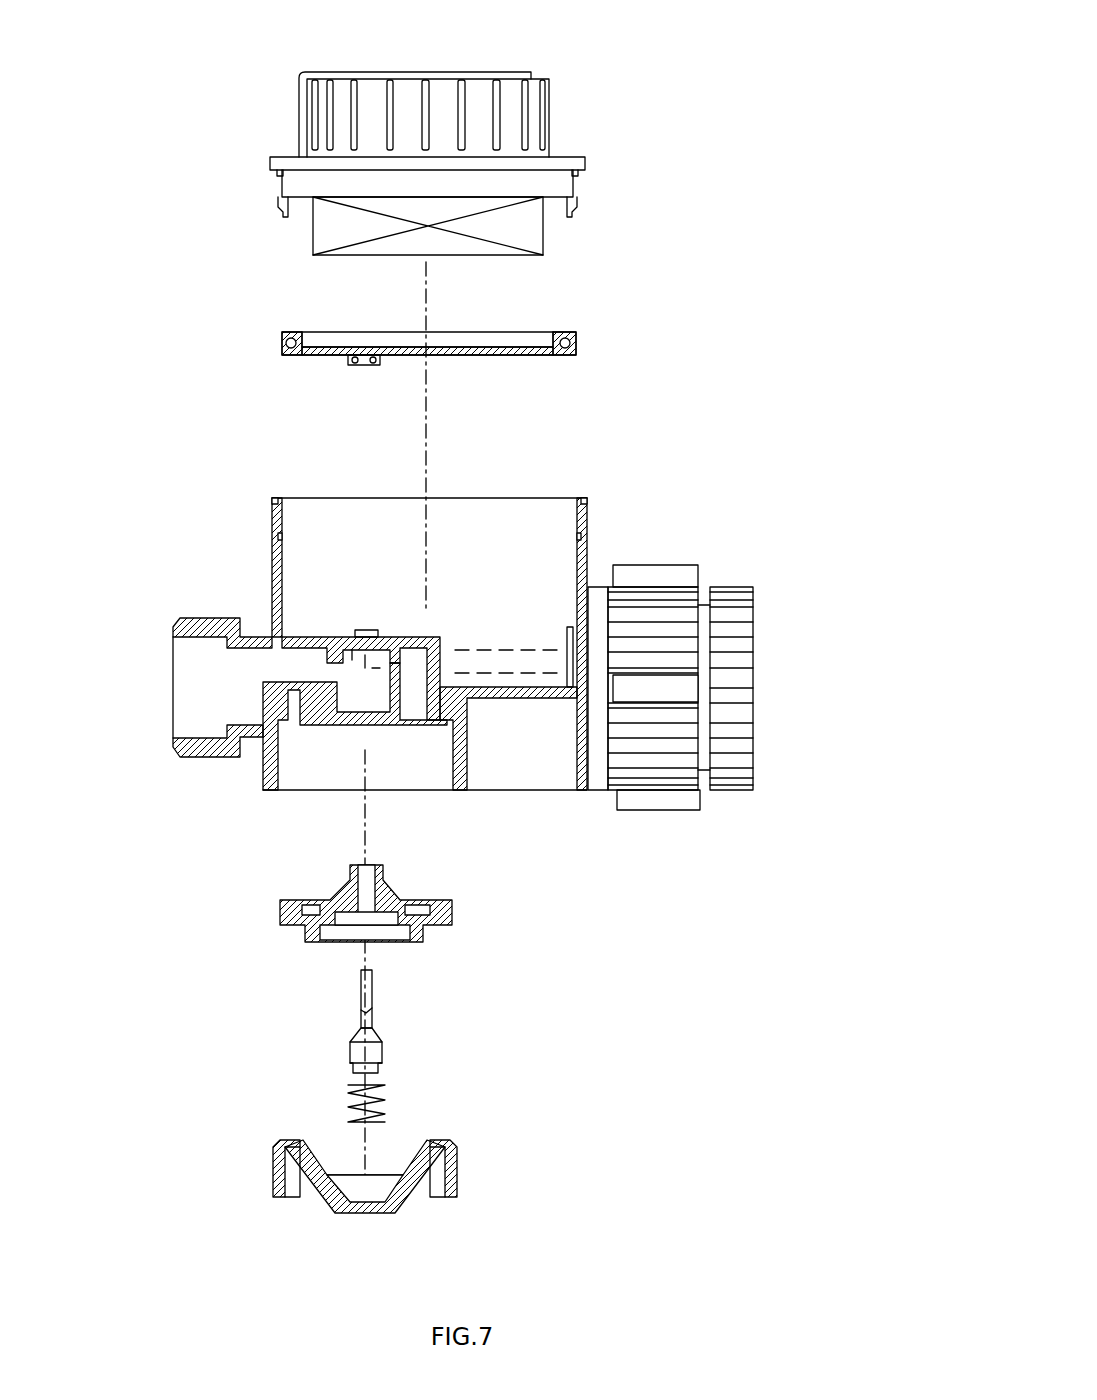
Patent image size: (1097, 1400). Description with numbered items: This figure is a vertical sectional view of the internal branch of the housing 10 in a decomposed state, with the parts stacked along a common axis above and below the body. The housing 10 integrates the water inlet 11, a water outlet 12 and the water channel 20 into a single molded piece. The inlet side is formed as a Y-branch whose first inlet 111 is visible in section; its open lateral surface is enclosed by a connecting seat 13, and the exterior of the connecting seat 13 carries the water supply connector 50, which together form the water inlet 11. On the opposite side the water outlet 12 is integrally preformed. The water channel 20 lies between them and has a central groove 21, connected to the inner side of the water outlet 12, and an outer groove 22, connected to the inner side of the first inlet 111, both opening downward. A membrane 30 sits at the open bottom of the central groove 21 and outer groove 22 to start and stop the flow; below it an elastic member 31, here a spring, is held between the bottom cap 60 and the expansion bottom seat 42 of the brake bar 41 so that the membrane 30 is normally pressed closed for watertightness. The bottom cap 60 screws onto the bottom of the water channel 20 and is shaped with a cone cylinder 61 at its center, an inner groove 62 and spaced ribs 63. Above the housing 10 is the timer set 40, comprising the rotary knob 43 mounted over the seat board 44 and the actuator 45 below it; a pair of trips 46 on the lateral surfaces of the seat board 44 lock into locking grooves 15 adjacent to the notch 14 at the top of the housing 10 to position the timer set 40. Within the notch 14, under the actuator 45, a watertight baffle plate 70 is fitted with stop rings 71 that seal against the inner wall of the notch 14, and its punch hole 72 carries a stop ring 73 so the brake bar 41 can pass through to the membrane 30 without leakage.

The housing 10 is at (270, 560).
The water inlet 11 is at (794, 640).
The water outlet 12 is at (195, 683).
The connecting seat 13 is at (602, 800).
The notch 14 is at (285, 505).
The locking groove 15 is at (283, 537).
The water channel 20 is at (398, 773).
The central groove 21 is at (358, 697).
The outer groove 22 is at (415, 707).
The membrane 30 is at (283, 915).
The elastic member 31 is at (348, 1100).
The timer set 40 is at (608, 211).
The brake bar 41 is at (372, 988).
The expansion bottom seat 42 is at (382, 1047).
The rotary knob 43 is at (340, 105).
The seat board 44 is at (290, 165).
The actuator 45 is at (312, 226).
The trip 46 is at (278, 210).
The water supply connector 50 is at (655, 590).
The bottom cap 60 is at (497, 1163).
The cone cylinder 61 is at (403, 1200).
The inner groove 62 is at (297, 1175).
The spaced ribs 63 is at (307, 1197).
The watertight baffle plate 70 is at (516, 345).
The stop ring 71 is at (573, 345).
The punch hole 72 is at (360, 350).
The stop ring 73 is at (352, 362).
The first inlet 111 is at (483, 660).